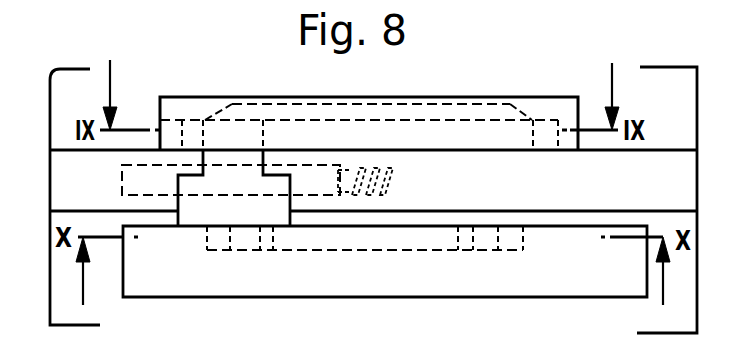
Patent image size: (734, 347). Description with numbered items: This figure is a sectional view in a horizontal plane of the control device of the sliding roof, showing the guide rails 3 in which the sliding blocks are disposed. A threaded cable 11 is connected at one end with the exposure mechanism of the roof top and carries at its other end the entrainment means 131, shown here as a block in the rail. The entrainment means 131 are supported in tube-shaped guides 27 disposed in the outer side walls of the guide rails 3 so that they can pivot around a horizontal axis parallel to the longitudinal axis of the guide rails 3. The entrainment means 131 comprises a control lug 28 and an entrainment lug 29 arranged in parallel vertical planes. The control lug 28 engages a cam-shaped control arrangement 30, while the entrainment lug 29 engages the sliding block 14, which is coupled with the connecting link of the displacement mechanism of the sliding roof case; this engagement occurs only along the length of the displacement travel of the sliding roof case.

The guide rails 3 is at (678, 107).
The cable 11 is at (363, 192).
The sliding block 14 is at (570, 268).
The tube-shaped guides 27 is at (445, 200).
The control lug 28 is at (238, 130).
The entrainment lug 29 is at (243, 240).
The cam-shaped control arrangement 30 is at (432, 133).
The entrainment means 131 is at (192, 213).